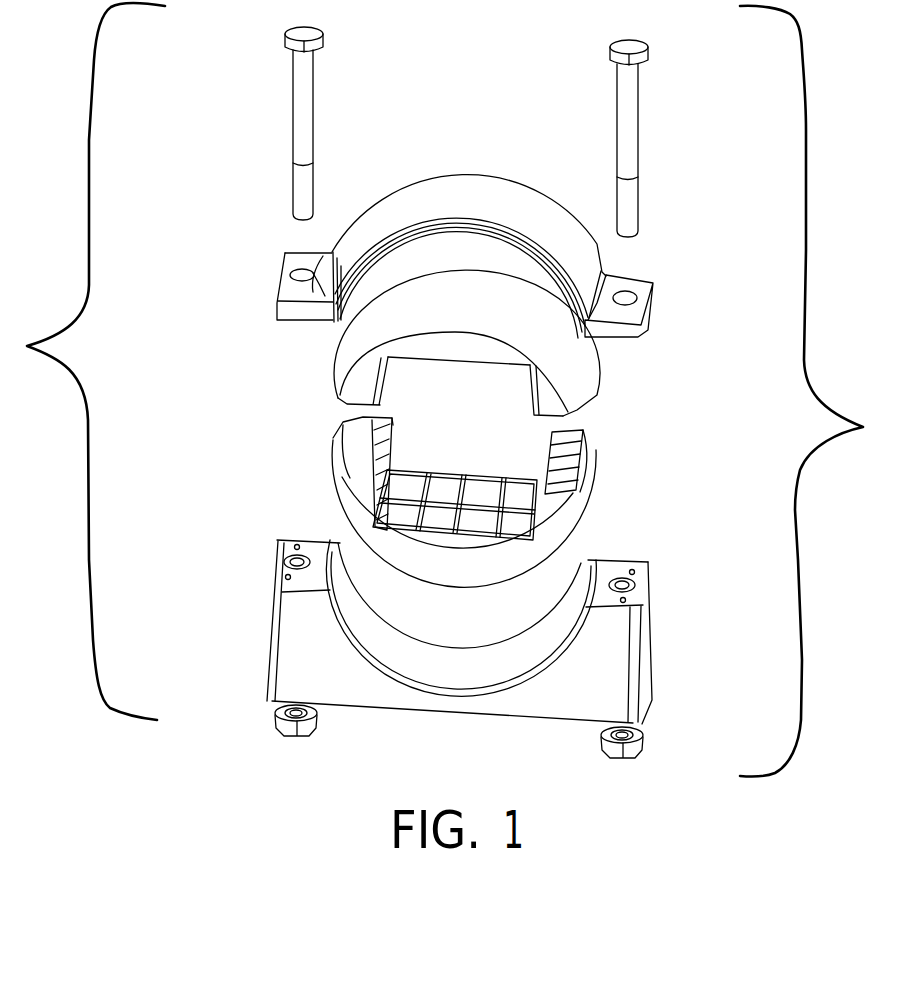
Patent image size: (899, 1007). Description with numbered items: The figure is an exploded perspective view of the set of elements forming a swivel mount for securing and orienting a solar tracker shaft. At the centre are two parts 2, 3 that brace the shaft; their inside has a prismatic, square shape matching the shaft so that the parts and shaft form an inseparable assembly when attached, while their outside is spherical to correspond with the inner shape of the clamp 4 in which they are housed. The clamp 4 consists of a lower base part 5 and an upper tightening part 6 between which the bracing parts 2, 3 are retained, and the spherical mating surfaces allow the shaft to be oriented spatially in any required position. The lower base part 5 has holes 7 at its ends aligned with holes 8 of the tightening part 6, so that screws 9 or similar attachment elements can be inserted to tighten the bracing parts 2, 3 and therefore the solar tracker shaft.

The part bracing the shaft 2 is at (568, 373).
The part bracing the shaft 3 is at (580, 470).
The clamp 4 is at (218, 373).
The lower base part 5 is at (312, 650).
The upper tightening part 6 is at (472, 195).
The holes 7 is at (283, 560).
The holes 8 is at (297, 276).
The screws 9 is at (300, 108).